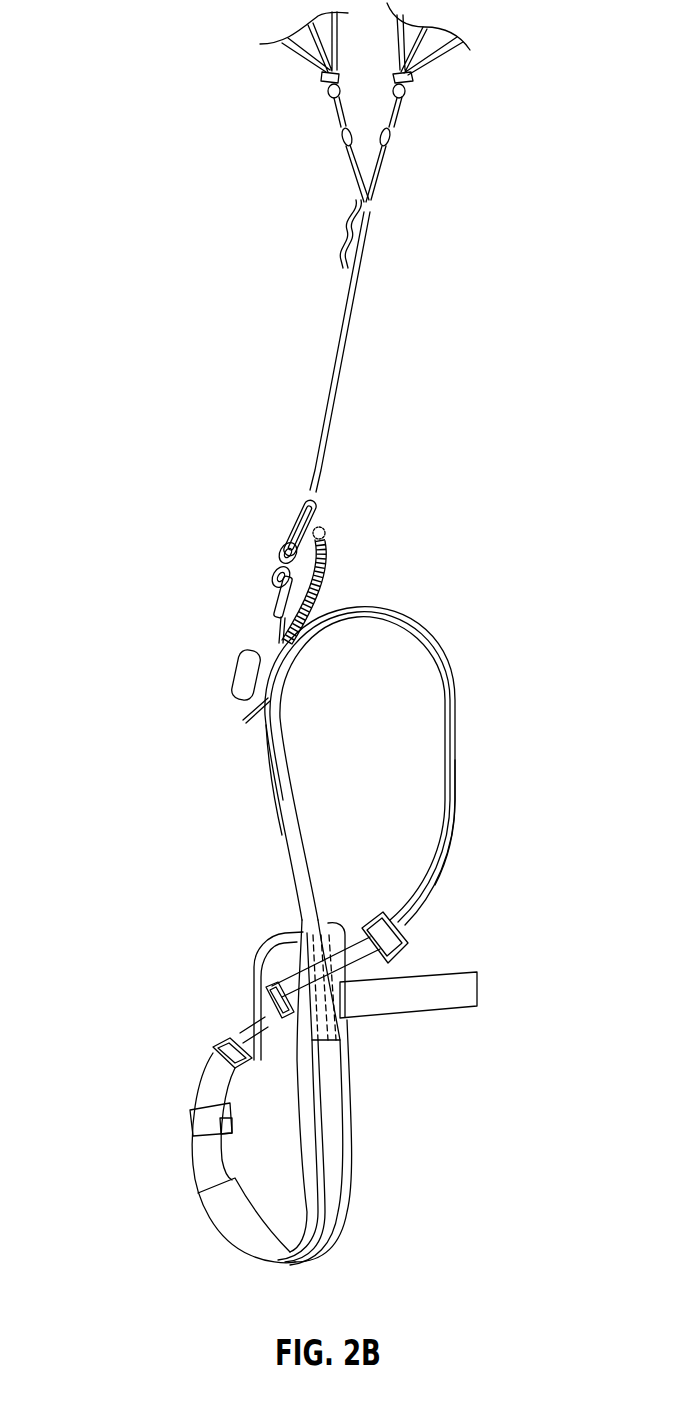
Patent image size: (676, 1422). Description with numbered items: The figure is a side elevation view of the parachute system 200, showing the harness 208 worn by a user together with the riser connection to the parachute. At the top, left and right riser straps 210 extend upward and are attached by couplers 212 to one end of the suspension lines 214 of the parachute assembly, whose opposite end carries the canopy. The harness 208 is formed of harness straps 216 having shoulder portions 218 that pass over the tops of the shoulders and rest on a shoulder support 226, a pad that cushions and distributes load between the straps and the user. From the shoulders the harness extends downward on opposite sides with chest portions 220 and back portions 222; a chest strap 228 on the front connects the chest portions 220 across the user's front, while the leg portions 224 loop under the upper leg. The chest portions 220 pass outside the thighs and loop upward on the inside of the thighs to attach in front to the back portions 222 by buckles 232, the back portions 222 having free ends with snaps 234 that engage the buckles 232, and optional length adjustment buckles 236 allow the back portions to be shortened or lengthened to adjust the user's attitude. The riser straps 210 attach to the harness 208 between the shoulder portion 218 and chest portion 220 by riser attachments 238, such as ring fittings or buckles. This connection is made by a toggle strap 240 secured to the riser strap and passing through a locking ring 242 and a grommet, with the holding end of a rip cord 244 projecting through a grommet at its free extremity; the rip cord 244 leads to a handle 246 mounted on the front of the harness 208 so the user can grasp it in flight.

The parachute system 200 is at (156, 26).
The harness 208 is at (300, 906).
The riser straps 210 is at (330, 377).
The couplers 212 is at (333, 138).
The suspension lines 214 is at (290, 55).
The harness straps 216 is at (457, 688).
The shoulder portions 218 is at (421, 622).
The chest portions 220 is at (284, 818).
The back portions 222 is at (457, 822).
The leg portions 224 is at (340, 1225).
The shoulder support 226 is at (367, 620).
The chest strap 228 is at (415, 1003).
The buckles 232 is at (217, 1043).
The snaps 234 is at (223, 1040).
The length adjustment buckles 236 is at (413, 945).
The riser attachments 238 is at (282, 608).
The toggle strap 240 is at (298, 508).
The locking ring 242 is at (289, 532).
The rip cord 244 is at (321, 575).
The handle 246 is at (242, 678).